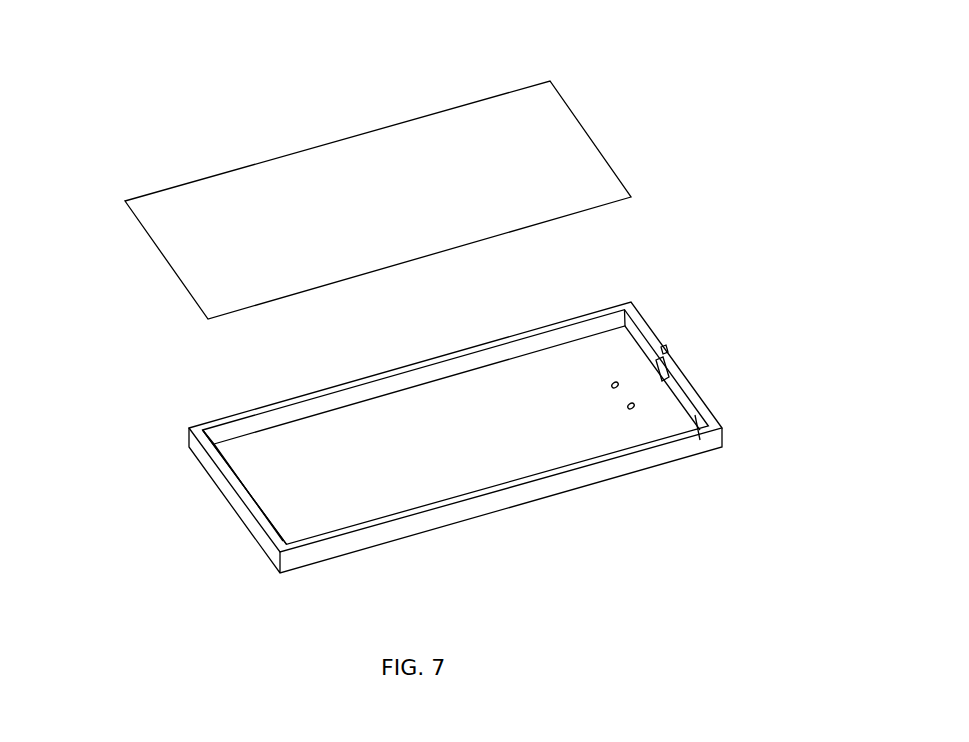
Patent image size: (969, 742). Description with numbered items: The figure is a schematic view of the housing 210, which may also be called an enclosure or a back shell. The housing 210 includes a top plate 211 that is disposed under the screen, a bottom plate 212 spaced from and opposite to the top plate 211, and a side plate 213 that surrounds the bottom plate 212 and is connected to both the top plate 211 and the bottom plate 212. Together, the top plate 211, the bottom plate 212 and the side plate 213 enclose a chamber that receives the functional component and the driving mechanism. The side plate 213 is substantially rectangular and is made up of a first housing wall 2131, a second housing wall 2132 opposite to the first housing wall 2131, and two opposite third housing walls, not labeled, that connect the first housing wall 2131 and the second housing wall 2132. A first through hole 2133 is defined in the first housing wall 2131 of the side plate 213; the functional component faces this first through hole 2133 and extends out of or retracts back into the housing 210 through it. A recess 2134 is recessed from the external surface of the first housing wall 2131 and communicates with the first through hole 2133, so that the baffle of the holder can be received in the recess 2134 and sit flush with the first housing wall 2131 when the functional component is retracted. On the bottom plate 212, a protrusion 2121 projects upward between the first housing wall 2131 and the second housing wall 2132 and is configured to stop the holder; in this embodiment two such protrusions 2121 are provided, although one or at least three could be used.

The housing 210 is at (253, 119).
The top plate 211 is at (581, 173).
The bottom plate 212 is at (268, 449).
The protrusion 2121 is at (613, 383).
The side plate 213 is at (468, 487).
The first housing wall 2131 is at (696, 415).
The second housing wall 2132 is at (267, 526).
The first through hole 2133 is at (663, 373).
The recess 2134 is at (677, 383).